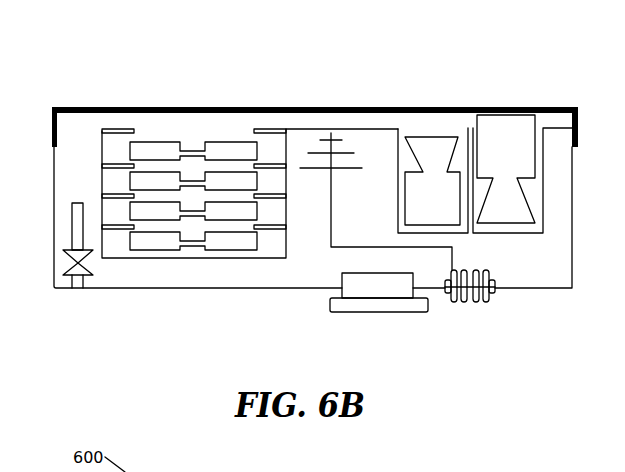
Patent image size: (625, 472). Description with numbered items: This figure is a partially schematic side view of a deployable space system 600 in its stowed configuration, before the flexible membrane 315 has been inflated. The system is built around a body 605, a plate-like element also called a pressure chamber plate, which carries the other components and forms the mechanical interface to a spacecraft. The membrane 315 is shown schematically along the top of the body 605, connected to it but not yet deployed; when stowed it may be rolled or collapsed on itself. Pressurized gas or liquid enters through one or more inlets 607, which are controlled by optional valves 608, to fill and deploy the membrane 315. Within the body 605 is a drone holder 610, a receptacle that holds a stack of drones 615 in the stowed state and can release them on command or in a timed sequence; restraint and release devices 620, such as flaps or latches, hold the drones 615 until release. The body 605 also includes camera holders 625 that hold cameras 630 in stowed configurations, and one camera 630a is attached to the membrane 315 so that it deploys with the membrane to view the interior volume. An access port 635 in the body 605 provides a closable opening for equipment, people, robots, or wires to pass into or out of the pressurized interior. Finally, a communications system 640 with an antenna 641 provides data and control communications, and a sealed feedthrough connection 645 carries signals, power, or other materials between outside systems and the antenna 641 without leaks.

The deployable space system 600 is at (76, 80).
The flexible membrane 315 is at (298, 108).
The body 605 is at (63, 160).
The drone holder 610 is at (190, 258).
The drones 615 is at (227, 147).
The restraint and release devices 620 is at (102, 132).
The camera holders 625 is at (587, 188).
The cameras 630 is at (498, 140).
The camera attached to the membrane 630a is at (518, 127).
The communications system 640 is at (353, 143).
The antenna 641 is at (318, 168).
The access ports 635 is at (370, 288).
The feedthrough connection 645 is at (477, 310).
The inlets 607 is at (78, 288).
The valves 608 is at (63, 286).